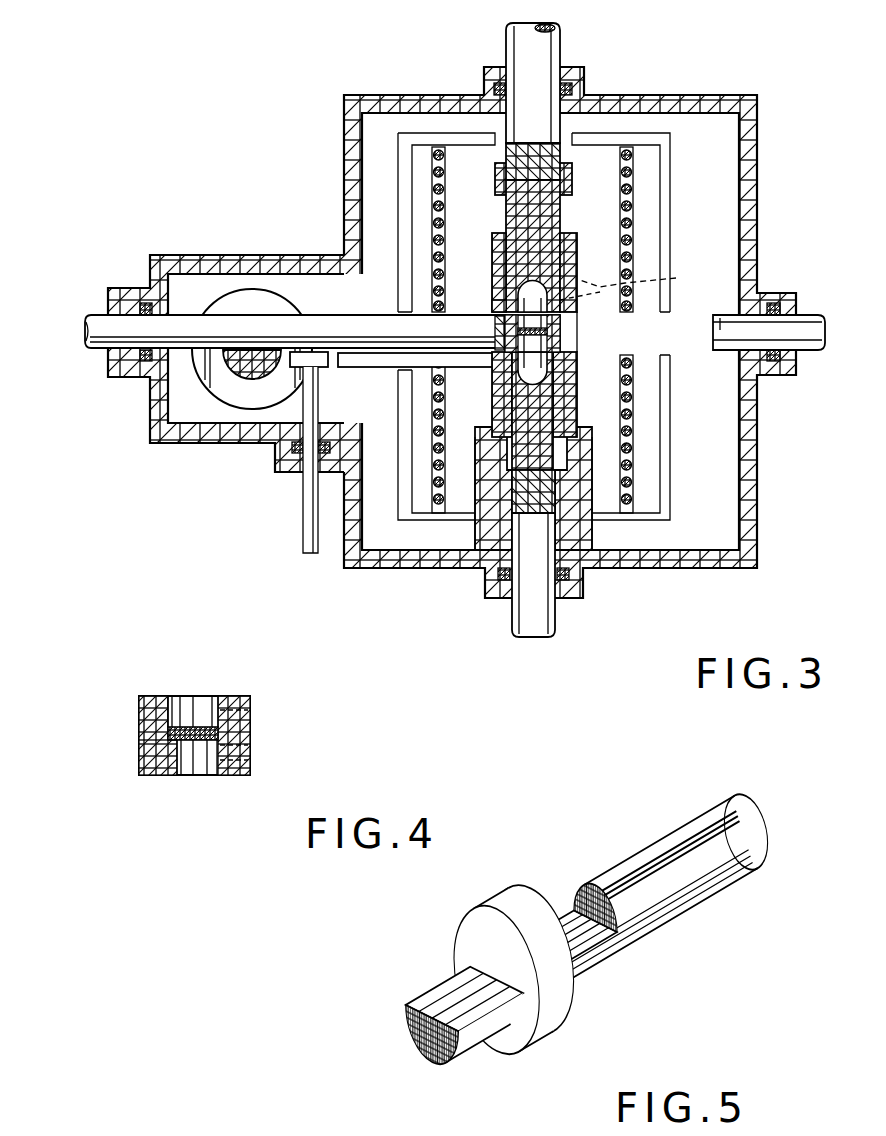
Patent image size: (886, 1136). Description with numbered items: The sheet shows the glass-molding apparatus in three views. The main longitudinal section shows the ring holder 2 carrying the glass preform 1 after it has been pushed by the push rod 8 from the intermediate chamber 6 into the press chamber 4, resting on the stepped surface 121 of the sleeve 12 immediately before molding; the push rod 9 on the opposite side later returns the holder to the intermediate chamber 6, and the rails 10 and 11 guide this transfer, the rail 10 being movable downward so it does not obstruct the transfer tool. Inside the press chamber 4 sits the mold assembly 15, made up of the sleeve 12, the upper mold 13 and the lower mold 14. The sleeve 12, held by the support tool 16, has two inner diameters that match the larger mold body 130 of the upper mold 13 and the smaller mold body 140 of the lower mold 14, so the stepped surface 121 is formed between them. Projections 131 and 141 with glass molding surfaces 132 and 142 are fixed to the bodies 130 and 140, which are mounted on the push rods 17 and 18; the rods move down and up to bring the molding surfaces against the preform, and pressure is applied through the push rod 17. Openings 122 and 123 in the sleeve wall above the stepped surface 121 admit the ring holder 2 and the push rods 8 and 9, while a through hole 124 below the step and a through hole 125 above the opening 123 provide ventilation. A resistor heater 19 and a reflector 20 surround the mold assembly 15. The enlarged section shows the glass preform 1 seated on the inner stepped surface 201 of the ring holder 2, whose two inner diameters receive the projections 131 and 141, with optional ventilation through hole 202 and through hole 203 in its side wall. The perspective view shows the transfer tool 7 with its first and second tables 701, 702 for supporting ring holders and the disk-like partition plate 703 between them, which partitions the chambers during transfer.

In FIG. 3, the glass preform 1 is at (548, 325).
In FIG. 4, the glass preform 1 is at (197, 722).
In FIG. 3, the ring holder 2 is at (560, 345).
In FIG. 4, the ring holder 2 is at (139, 727).
In FIG. 3, the press chamber 4 is at (600, 157).
In FIG. 3, the intermediate chamber 6 is at (185, 285).
In FIG. 5, the transfer tool 7 is at (624, 858).
In FIG. 3, the push rod 8 is at (100, 330).
In FIG. 3, the push rod 9 is at (805, 332).
In FIG. 3, the rail 10 is at (320, 364).
In FIG. 3, the rail 11 is at (395, 357).
In FIG. 3, the sleeve 12 is at (572, 247).
In FIG. 3, the upper mold 13 is at (565, 204).
In FIG. 3, the lower mold 14 is at (500, 453).
In FIG. 3, the mold assembly 15 is at (582, 270).
In FIG. 3, the support tool 16 is at (490, 535).
In FIG. 3, the push rod 17 is at (535, 45).
In FIG. 3, the push rod 18 is at (530, 608).
In FIG. 3, the resistor heater 19 is at (634, 178).
In FIG. 3, the reflector 20 is at (655, 232).
In FIG. 3, the stepped surface 121 is at (500, 370).
In FIG. 3, the opening 122 is at (515, 310).
In FIG. 3, the opening 123 is at (567, 332).
In FIG. 3, the through hole 124 is at (560, 372).
In FIG. 3, the through hole 125 is at (645, 276).
In FIG. 3, the mold body 130 is at (520, 213).
In FIG. 3, the projection 131 is at (515, 295).
In FIG. 3, the glass molding surface 132 is at (555, 300).
In FIG. 3, the mold body 140 is at (530, 415).
In FIG. 3, the projection 141 is at (560, 400).
In FIG. 3, the glass molding surface 142 is at (510, 337).
In FIG. 4, the inner stepped surface 201 is at (205, 745).
In FIG. 4, the through hole 202 is at (252, 775).
In FIG. 4, the through hole 203 is at (252, 700).
In FIG. 5, the first table 701 is at (435, 1000).
In FIG. 3, the second table 702 is at (262, 372).
In FIG. 5, the second table 702 is at (565, 928).
In FIG. 3, the disk-like partition plate 703 is at (228, 405).
In FIG. 5, the disk-like partition plate 703 is at (500, 913).